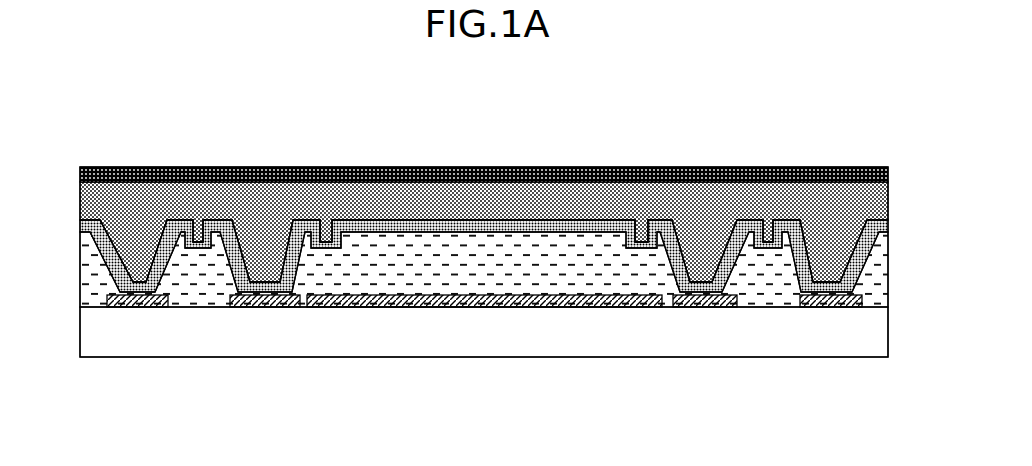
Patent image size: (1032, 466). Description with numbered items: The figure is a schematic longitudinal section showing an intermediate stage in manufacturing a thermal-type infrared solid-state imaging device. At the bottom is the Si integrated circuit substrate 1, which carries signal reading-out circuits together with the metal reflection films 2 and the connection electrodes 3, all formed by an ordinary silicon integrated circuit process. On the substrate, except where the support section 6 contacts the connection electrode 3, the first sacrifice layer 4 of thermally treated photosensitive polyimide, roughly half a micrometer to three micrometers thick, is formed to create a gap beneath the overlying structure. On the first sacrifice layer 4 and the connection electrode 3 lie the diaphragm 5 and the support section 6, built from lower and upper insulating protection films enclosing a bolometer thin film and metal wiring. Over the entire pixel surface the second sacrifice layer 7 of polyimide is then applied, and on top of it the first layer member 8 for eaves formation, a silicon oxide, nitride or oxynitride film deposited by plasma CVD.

The Si integrated circuit substrate 1 is at (245, 337).
The metal reflection film 2 is at (502, 308).
The connection electrode 3 is at (707, 307).
The first sacrifice layer 4 is at (198, 283).
The diaphragm 5 is at (490, 223).
The support section 6 is at (252, 240).
The second sacrifice layer 7 is at (200, 198).
The first layer member for eaves formation 8 is at (672, 168).